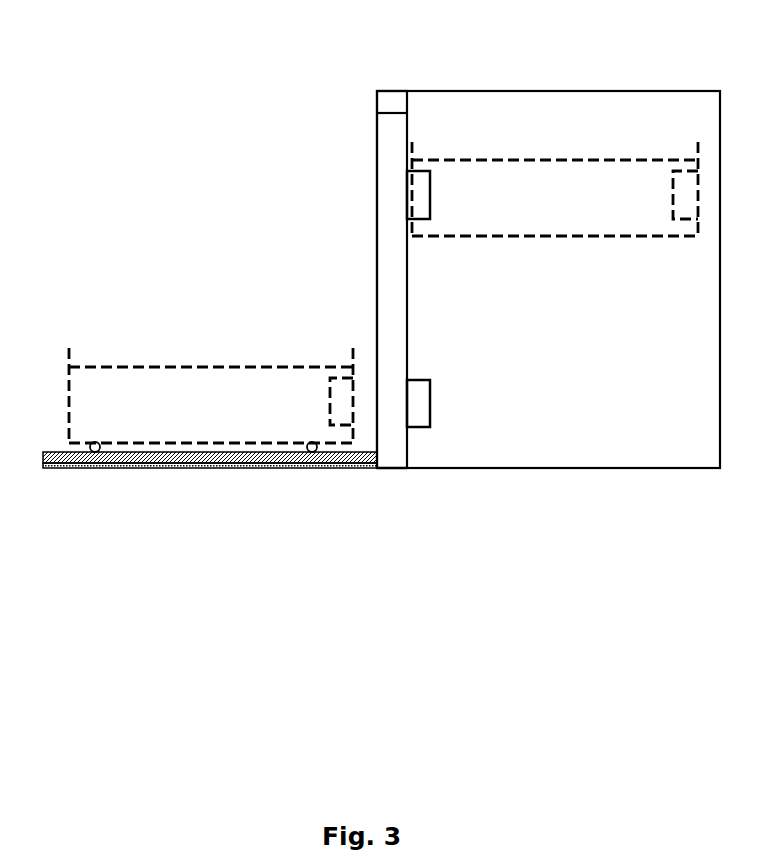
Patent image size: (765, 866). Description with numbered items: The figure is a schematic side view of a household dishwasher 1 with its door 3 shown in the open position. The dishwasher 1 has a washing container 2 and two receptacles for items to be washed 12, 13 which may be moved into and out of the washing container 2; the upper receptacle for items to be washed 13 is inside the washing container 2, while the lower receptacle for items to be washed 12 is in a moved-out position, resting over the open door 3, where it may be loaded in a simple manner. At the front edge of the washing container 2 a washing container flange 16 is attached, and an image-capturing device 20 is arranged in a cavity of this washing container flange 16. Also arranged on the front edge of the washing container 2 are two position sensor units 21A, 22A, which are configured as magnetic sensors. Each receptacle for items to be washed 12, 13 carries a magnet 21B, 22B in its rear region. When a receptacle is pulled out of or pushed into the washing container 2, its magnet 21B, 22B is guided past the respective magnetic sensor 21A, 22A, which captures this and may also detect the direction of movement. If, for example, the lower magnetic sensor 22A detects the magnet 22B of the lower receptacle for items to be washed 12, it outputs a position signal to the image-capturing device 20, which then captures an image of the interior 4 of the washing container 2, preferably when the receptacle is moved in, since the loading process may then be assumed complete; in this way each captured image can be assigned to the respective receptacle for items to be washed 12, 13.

The dishwasher 1 is at (80, 119).
The washing container 2 is at (576, 88).
The door 3 is at (93, 469).
The interior space 4 is at (573, 371).
The lower receptacle for items to be washed 12 is at (178, 444).
The receptacle for items to be washed 13 is at (520, 237).
The washing container flange 16 is at (391, 468).
The image-capturing device 20 is at (397, 90).
The position sensor unit 21A is at (415, 224).
The magnet 21B is at (686, 222).
The position sensor unit 22A is at (415, 428).
The magnet 22B is at (345, 427).